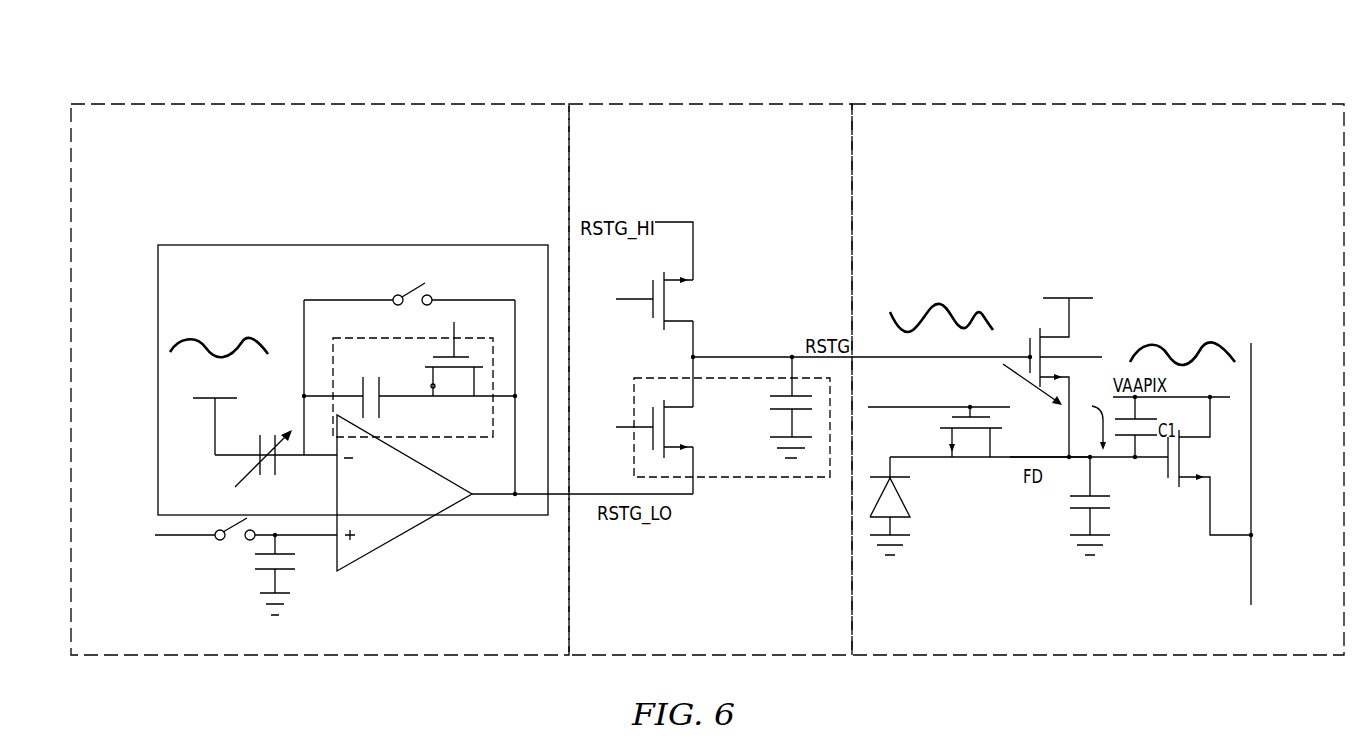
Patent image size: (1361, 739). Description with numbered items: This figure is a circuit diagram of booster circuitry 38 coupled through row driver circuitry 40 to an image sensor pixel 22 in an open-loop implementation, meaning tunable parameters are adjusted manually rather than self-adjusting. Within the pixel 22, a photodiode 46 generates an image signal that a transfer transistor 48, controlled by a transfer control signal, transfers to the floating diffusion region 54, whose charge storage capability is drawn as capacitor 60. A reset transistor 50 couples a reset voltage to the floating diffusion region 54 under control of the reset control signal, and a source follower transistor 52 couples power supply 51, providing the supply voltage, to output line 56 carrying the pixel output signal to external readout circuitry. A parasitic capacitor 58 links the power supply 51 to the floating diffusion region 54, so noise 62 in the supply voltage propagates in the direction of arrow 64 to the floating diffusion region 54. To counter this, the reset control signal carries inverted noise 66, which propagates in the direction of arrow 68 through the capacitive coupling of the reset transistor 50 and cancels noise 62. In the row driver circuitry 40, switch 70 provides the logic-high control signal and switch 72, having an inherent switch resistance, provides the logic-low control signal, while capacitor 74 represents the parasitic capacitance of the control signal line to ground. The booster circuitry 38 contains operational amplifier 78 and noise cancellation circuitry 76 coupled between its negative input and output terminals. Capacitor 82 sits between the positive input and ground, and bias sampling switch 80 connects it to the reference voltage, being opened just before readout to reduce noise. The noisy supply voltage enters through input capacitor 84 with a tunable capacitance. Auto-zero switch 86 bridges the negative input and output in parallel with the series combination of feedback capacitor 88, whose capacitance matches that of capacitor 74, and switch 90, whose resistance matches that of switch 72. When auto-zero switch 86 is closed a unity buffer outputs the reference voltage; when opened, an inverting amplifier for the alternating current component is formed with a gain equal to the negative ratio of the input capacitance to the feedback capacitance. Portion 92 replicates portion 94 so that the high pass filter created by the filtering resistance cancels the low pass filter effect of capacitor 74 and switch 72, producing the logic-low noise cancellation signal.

The image sensor pixel 22 is at (1098, 333).
The booster circuitry 38 is at (316, 333).
The row driver circuitry 40 is at (697, 333).
The photodiode 46 is at (862, 506).
The transfer transistor 48 is at (939, 443).
The reset transistor 50 is at (1069, 365).
The power supply 51 is at (1255, 379).
The source follower transistor 52 is at (1262, 441).
The floating diffusion region 54 is at (1050, 483).
The output line 56 is at (1270, 476).
The parasitic capacitor 58 is at (1198, 466).
The capacitor 60 is at (1088, 505).
The noise 62 is at (707, 324).
The arrow 64 is at (1091, 415).
The inverted noise 66 is at (941, 288).
The arrow 68 is at (1014, 383).
The switch 70 is at (670, 304).
The switch 72 is at (669, 425).
The capacitor 74 is at (759, 407).
The noise cancellation circuitry 76 is at (351, 354).
The operational amplifier 78 is at (515, 504).
The bias sampling switch 80 is at (218, 550).
The capacitor 82 is at (295, 579).
The input capacitor 84 is at (263, 442).
The auto-zero switch 86 is at (409, 374).
The feedback capacitor 88 is at (391, 359).
The switch 90 is at (481, 342).
The portion 92 is at (413, 412).
The portion 94 is at (732, 452).